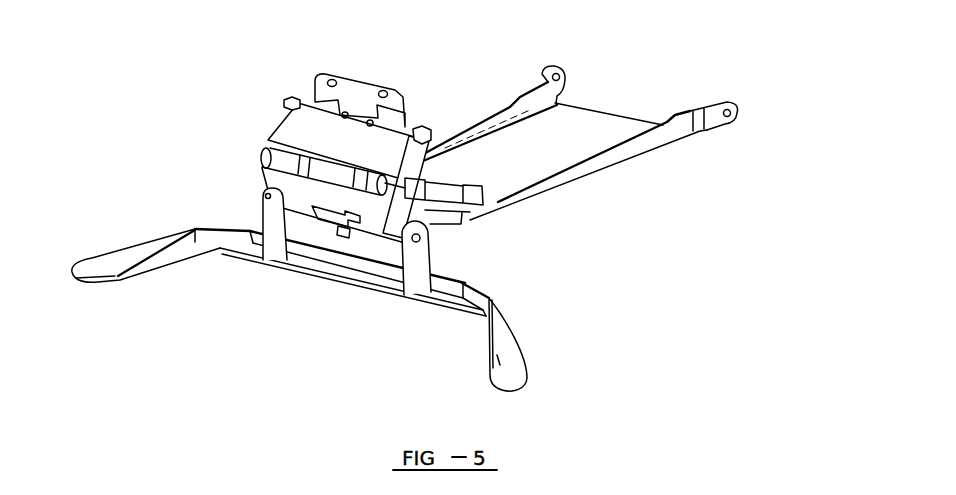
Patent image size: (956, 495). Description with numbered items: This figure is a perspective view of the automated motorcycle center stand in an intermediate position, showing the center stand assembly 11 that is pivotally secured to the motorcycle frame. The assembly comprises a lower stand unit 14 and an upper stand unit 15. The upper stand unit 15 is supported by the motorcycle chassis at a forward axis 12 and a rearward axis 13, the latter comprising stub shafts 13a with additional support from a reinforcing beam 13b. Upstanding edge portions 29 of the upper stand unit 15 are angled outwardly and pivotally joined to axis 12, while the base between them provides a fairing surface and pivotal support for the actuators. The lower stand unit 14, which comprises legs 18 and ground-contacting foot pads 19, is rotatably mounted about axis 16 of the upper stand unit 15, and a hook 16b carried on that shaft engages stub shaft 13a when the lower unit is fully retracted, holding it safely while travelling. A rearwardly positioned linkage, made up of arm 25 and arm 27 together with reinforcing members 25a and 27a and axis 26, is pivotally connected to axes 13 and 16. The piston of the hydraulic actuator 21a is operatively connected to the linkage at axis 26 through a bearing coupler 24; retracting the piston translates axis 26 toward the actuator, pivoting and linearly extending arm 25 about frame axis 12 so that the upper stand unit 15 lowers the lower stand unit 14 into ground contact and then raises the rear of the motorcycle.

The center stand assembly 11 is at (648, 74).
The axis 12 is at (735, 106).
The axis 13 is at (212, 81).
The stub shaft 13a is at (298, 101).
The reinforcing beam 13b is at (368, 86).
The lower stand unit 14 is at (257, 282).
The upper stand unit 15 is at (612, 193).
The axis 16 is at (427, 238).
The hook 16b is at (345, 232).
The leg 18 is at (418, 265).
The foot pad 19 is at (513, 368).
The actuator 21a is at (473, 184).
The bearing coupler 24 is at (262, 165).
The arm 25 is at (424, 126).
The reinforcing member 25a is at (270, 130).
The axis 26 is at (275, 154).
The arm 27 is at (400, 210).
The reinforcing member 27a is at (262, 195).
The upstanding edge portion 29 is at (514, 101).